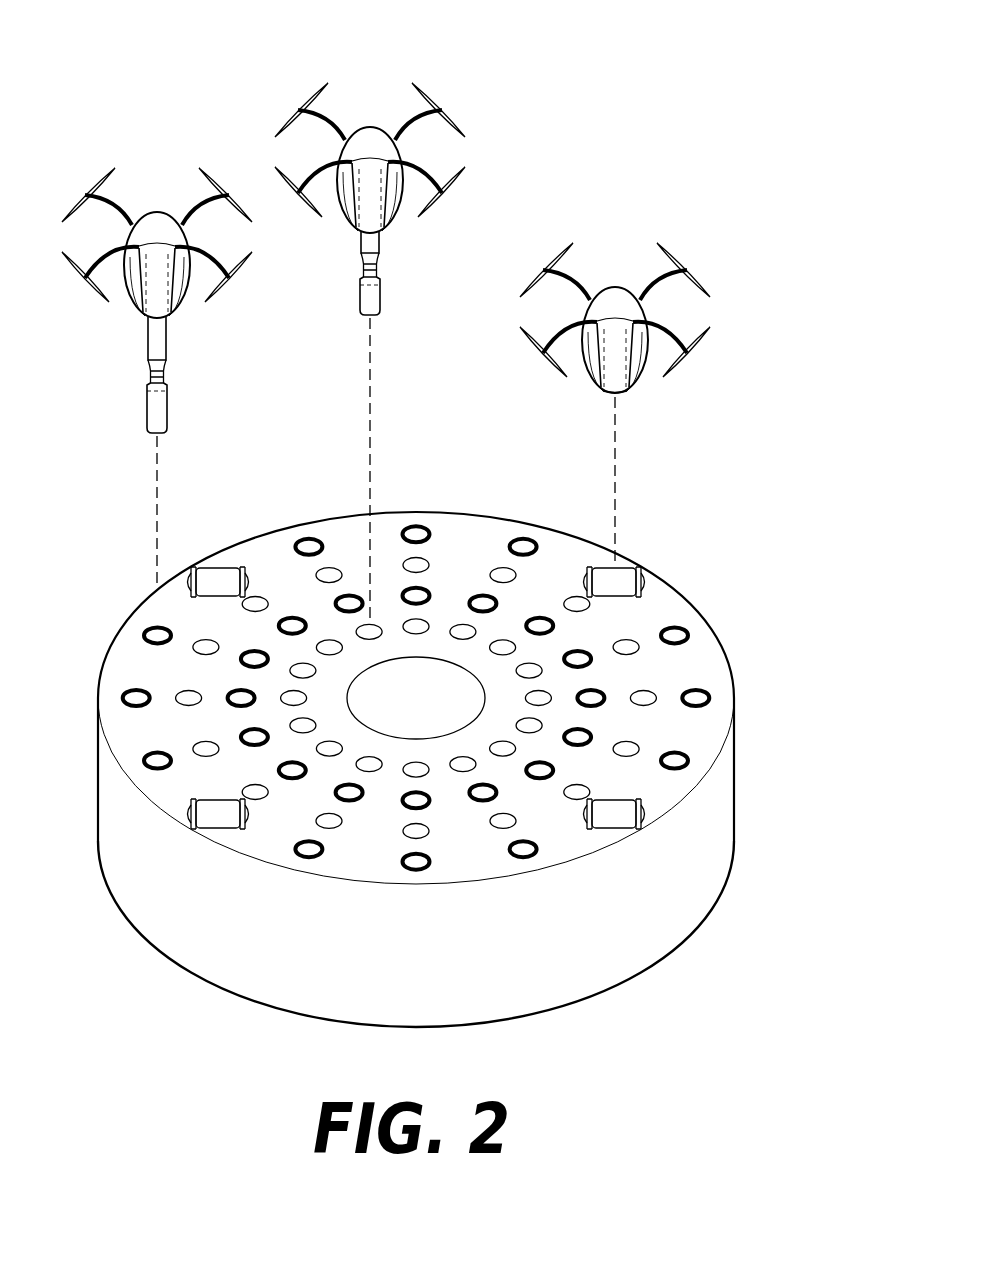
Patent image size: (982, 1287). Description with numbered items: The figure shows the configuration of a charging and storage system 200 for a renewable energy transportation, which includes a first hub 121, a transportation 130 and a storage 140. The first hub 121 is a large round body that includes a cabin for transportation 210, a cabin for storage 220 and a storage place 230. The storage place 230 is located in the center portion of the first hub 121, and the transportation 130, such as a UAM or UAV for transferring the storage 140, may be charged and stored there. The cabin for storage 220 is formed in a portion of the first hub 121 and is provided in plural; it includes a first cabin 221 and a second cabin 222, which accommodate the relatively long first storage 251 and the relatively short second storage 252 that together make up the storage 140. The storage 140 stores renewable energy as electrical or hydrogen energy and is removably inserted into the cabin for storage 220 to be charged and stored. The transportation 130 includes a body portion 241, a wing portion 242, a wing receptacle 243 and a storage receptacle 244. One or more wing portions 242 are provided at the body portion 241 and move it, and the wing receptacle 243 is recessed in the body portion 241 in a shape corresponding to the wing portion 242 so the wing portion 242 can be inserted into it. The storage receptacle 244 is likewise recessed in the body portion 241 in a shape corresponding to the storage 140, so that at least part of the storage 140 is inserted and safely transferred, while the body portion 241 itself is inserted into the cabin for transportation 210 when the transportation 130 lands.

The charging and storage system 200 is at (120, 47).
The first hub 121 is at (731, 797).
The transportation 130 is at (655, 331).
The storage 140 is at (263, 332).
The cabin for transportation 210 is at (628, 570).
The cabin for storage 220 is at (416, 637).
The first cabin 221 is at (160, 632).
The second cabin 222 is at (369, 632).
The storage place 230 is at (442, 685).
The body portion 241 is at (610, 290).
The wing portion 242 is at (683, 272).
The wing receptacle 243 is at (641, 377).
The storage receptacle 244 is at (635, 422).
The first storage 251 is at (165, 343).
The second storage 252 is at (358, 307).